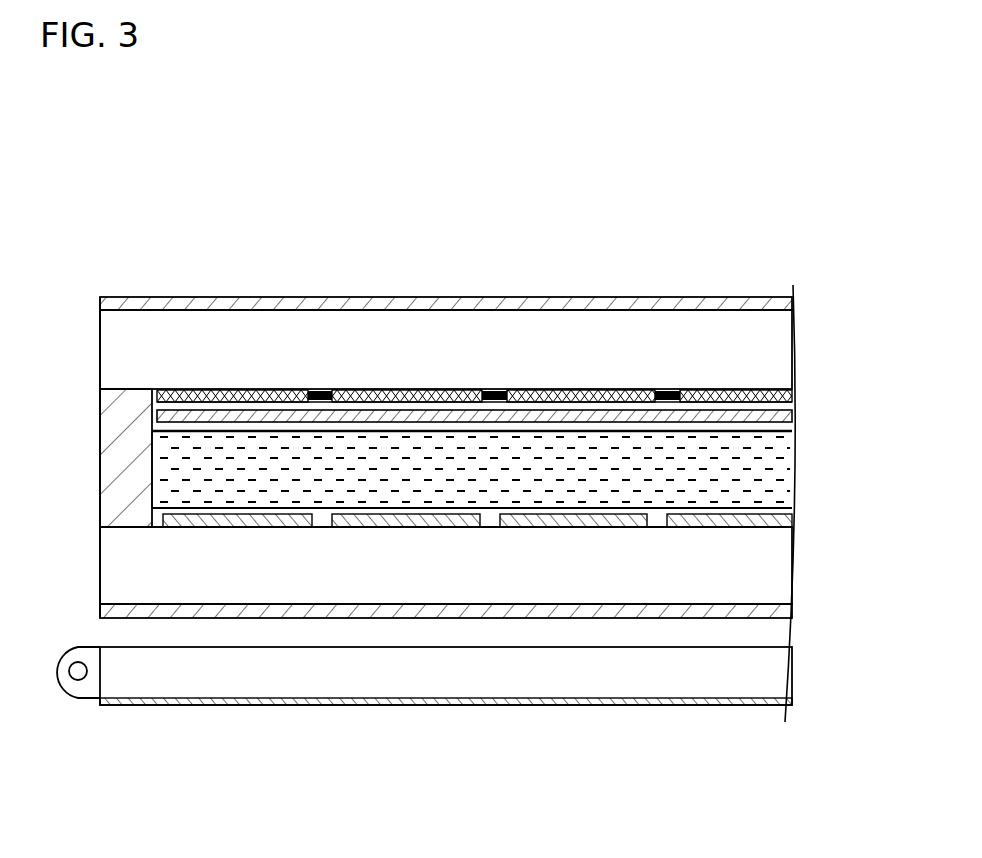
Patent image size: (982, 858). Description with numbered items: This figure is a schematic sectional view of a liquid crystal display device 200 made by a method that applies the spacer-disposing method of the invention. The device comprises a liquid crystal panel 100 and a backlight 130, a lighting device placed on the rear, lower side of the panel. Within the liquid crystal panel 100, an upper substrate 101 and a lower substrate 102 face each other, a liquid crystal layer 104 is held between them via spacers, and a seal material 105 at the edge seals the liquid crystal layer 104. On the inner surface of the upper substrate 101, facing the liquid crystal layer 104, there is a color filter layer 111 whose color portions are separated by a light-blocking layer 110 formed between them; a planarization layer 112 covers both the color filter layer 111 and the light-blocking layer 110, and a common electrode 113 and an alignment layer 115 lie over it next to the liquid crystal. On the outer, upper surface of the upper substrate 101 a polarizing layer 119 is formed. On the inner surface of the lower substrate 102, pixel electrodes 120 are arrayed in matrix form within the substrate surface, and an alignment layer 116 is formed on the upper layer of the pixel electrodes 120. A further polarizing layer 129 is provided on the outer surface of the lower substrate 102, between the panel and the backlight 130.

The liquid crystal display device 200 is at (715, 152).
The liquid crystal panel 100 is at (765, 262).
The seal material 105 is at (110, 390).
The color filter layer 111 is at (233, 390).
The light-blocking layer 110 is at (320, 391).
The polarizing layer 119 is at (783, 307).
The upper substrate 101 is at (783, 337).
The planarization layer 112 is at (790, 403).
The common electrode 113 is at (790, 417).
The alignment layer 115 is at (790, 428).
The liquid crystal layer 104 is at (783, 463).
The alignment layer 116 is at (793, 510).
The pixel electrodes 120 is at (235, 527).
The lower substrate 102 is at (783, 567).
The polarizing layer 129 is at (790, 610).
The backlight 130 is at (783, 668).